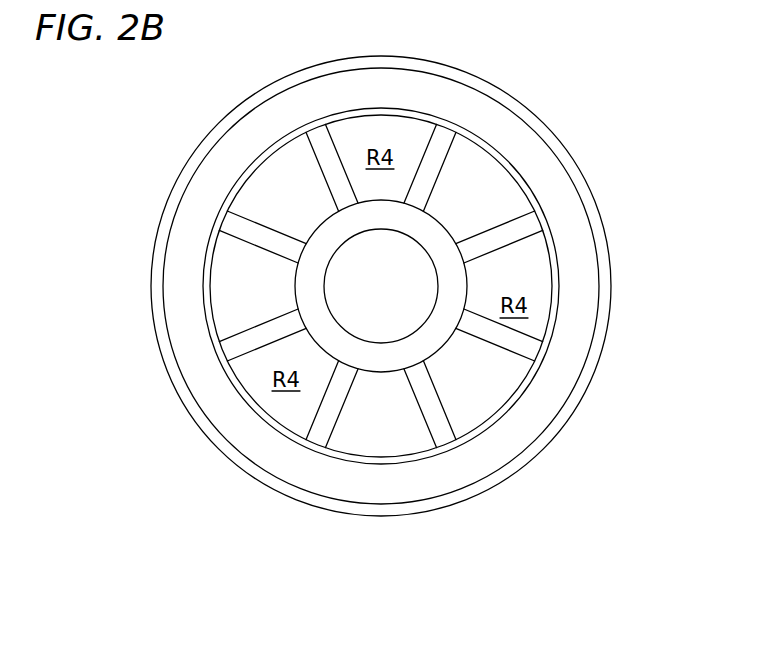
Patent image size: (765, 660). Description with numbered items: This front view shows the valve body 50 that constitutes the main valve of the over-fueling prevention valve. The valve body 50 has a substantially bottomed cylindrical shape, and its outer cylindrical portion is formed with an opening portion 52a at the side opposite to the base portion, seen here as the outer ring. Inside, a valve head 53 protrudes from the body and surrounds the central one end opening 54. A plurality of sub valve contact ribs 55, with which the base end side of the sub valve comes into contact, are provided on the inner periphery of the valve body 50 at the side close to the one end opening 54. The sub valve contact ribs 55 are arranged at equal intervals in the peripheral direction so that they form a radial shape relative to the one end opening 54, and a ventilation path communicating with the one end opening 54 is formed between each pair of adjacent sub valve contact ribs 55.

The valve body 50 is at (514, 94).
The opening portion 52a is at (550, 160).
The valve head 53 is at (432, 340).
The one end opening 54 is at (435, 289).
The sub valve contact ribs 55 is at (322, 147).